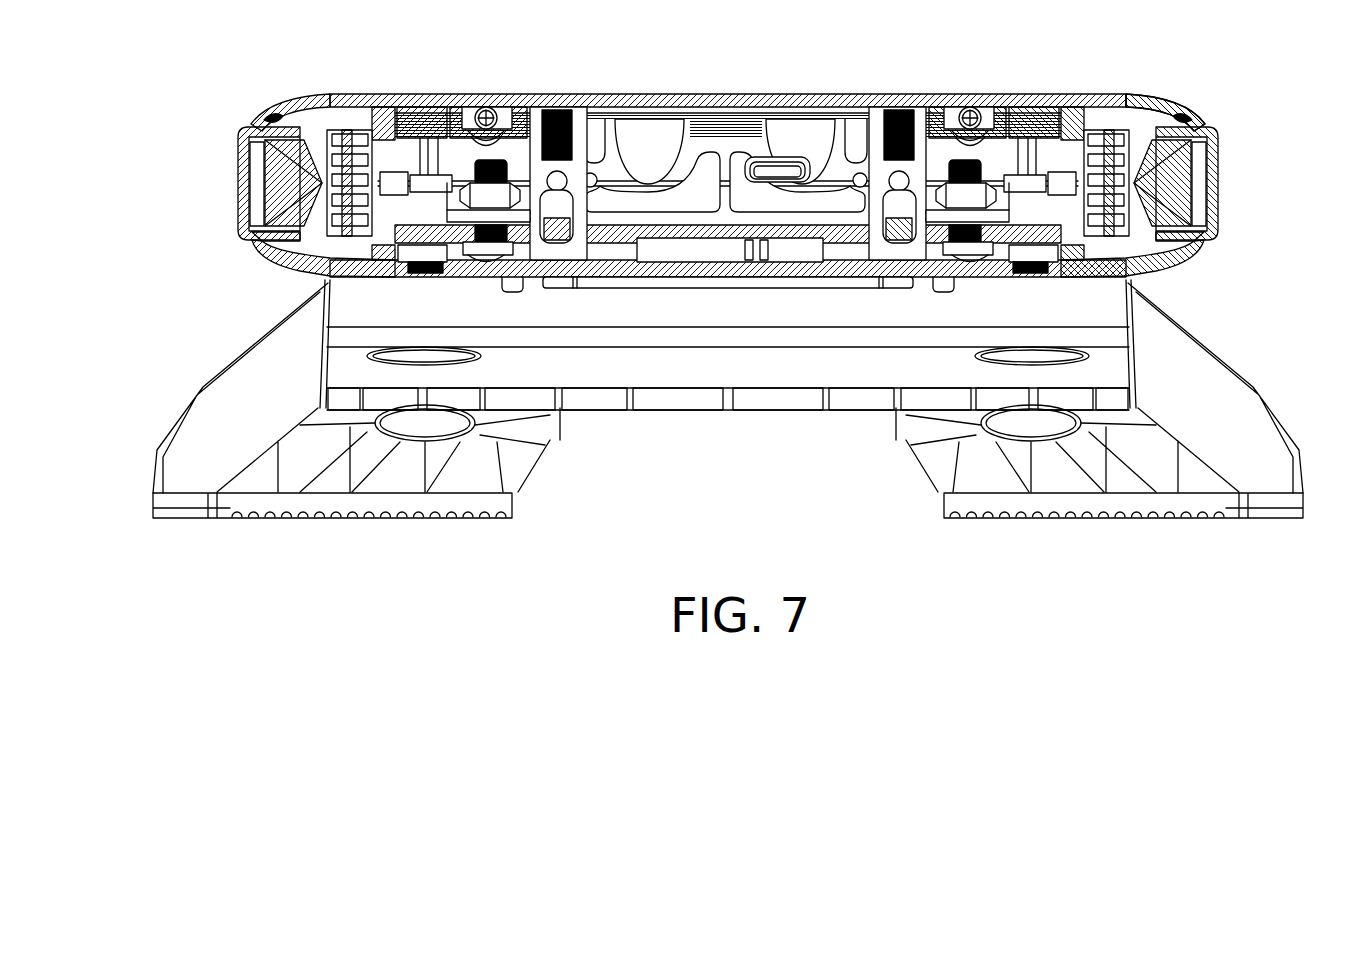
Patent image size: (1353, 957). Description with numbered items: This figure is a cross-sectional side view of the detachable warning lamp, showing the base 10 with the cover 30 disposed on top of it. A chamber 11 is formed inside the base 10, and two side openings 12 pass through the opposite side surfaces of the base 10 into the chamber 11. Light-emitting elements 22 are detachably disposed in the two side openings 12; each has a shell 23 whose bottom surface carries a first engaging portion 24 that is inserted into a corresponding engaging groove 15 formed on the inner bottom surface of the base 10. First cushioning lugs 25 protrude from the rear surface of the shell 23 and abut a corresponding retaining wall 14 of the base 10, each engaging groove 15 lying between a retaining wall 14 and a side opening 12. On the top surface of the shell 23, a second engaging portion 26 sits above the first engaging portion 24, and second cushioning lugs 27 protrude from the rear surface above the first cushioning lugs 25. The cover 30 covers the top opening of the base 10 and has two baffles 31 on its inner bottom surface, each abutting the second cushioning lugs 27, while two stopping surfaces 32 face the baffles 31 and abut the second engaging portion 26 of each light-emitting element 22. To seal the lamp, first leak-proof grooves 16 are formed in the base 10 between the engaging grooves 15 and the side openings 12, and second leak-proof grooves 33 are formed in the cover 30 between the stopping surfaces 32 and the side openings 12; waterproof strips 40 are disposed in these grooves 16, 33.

The base 10 is at (693, 277).
The chamber 11 is at (777, 113).
The side openings 12 is at (250, 230).
The retaining walls 14 is at (370, 265).
The engaging grooves 15 is at (307, 255).
The first leak-proof grooves 16 is at (262, 240).
The light-emitting elements 22 is at (226, 180).
The shell 23 is at (278, 130).
The first engaging portion 24 is at (1170, 248).
The first cushioning lugs 25 is at (1077, 250).
The second engaging portion 26 is at (1160, 120).
The second cushioning lugs 27 is at (1064, 132).
The cover 30 is at (712, 93).
The baffles 31 is at (393, 137).
The stopping surfaces 32 is at (313, 130).
The second leak-proof grooves 33 is at (270, 118).
The waterproof strips 40 is at (1177, 118).